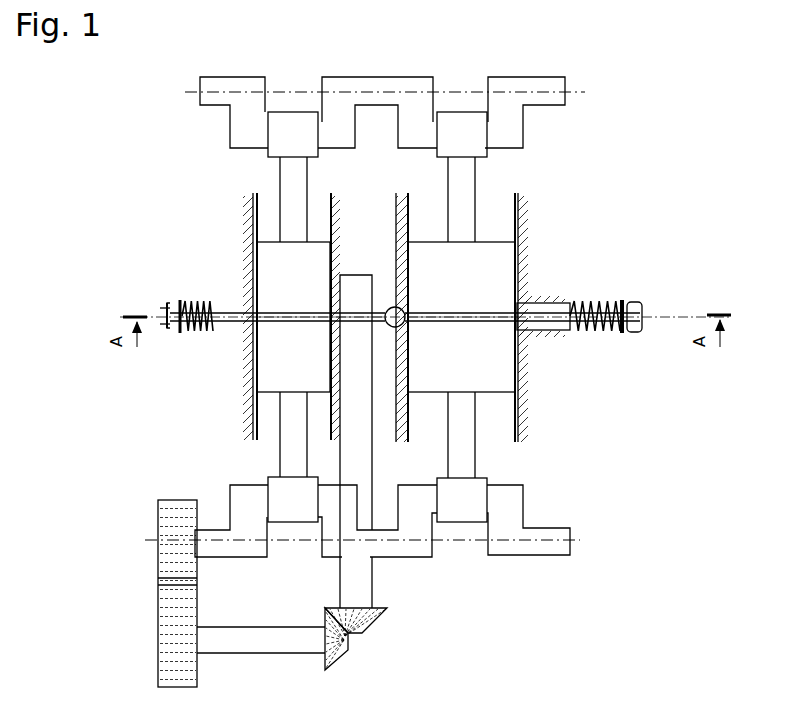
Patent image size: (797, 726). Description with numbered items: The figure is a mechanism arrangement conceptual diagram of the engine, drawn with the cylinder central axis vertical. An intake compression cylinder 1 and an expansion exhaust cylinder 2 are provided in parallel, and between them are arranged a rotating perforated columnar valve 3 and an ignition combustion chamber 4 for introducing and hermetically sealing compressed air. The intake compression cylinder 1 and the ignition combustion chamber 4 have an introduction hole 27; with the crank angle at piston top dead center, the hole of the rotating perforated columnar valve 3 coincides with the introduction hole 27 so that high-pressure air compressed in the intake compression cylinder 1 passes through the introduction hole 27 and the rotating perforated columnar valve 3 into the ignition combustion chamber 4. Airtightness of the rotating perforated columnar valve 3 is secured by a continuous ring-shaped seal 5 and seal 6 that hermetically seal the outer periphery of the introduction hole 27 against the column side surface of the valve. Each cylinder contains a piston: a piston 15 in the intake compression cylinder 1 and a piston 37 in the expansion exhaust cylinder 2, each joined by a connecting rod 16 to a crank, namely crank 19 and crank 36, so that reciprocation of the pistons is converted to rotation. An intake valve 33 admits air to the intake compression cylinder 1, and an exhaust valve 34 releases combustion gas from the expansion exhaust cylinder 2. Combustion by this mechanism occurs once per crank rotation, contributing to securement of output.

The intake compression cylinder 1 is at (254, 227).
The expansion exhaust cylinder 2 is at (518, 214).
The rotating perforated columnar valve 3 is at (343, 347).
The ignition combustion chamber 4 is at (400, 325).
The seal 5 is at (330, 309).
The seal 6 is at (378, 311).
The piston 15 is at (276, 259).
The connecting rod 16 is at (276, 181).
The crank 19 is at (526, 502).
The introduction hole 27 is at (333, 308).
The intake valve 33 is at (167, 304).
The exhaust valve 34 is at (643, 298).
The crank 36 is at (526, 129).
The piston 37 is at (498, 299).